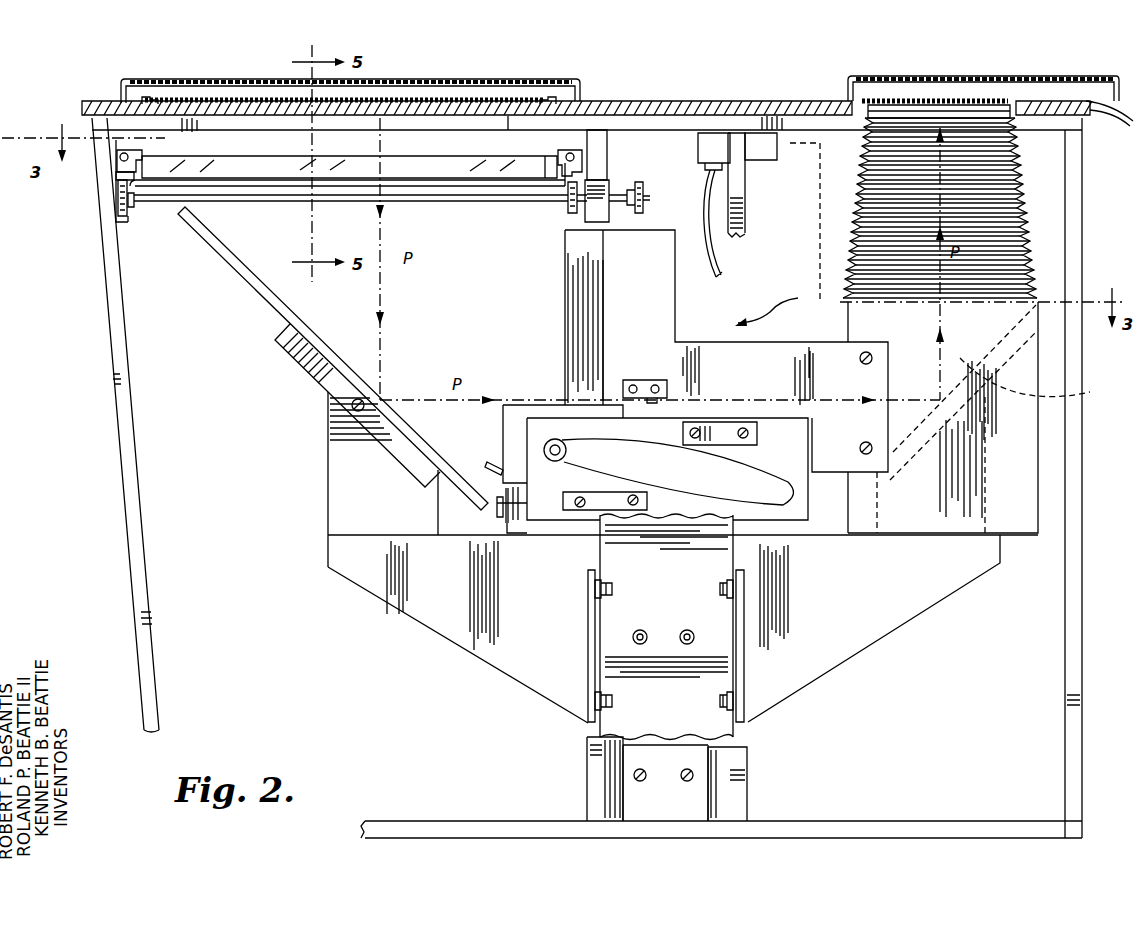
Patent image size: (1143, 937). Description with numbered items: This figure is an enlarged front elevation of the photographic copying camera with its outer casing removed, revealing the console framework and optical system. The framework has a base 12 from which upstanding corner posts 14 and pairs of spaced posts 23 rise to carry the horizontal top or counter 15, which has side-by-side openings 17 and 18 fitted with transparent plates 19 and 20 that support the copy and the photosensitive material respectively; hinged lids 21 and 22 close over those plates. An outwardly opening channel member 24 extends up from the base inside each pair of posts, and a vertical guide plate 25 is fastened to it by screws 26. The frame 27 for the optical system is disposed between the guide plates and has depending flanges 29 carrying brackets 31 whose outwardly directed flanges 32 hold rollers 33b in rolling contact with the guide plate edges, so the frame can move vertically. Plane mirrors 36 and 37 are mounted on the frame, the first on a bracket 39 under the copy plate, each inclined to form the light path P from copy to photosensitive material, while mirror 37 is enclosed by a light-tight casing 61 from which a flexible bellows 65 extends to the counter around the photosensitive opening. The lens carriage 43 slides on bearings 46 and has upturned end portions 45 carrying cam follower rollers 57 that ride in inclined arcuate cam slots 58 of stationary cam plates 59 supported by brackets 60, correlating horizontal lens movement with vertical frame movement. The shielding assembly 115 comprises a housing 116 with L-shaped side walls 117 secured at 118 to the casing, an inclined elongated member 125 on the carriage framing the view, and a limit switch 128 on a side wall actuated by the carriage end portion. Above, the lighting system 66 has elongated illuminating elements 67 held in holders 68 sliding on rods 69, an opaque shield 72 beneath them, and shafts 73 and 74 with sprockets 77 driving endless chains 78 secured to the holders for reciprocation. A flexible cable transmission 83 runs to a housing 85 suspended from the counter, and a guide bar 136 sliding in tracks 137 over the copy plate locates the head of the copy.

The base 12 is at (853, 832).
The corner posts 14 is at (128, 434).
The top or counter 15 is at (662, 101).
The opening 17 is at (528, 118).
The opening 18 is at (1000, 108).
The transparent plate 19 is at (490, 84).
The transparent plate 20 is at (985, 100).
The lid 21 is at (242, 80).
The lid 22 is at (928, 78).
The posts 23 is at (610, 176).
The channel member 24 is at (700, 815).
The guide plate 25 is at (718, 735).
The screws 26 is at (686, 781).
The frame 27 is at (898, 628).
The flanges 29 is at (548, 694).
The brackets 31 is at (746, 630).
The flanges 32 is at (590, 663).
The rollers 33b is at (600, 588).
The mirror 36 is at (265, 296).
The mirror 37 is at (1003, 392).
The bracket 39 is at (330, 481).
The carriage 43 is at (502, 427).
The upturned end portions 45 is at (520, 414).
The bearings 46 is at (510, 525).
The cam follower rollers 57 is at (566, 450).
The cam slots 58 is at (717, 466).
The cam plates 59 is at (806, 510).
The brackets 60 is at (683, 434).
The light-tight casing 61 is at (1015, 535).
The flexible bellows 65 is at (1024, 200).
The lighting system 66 is at (290, 205).
The illuminating elements 67 is at (405, 165).
The holders 68 is at (125, 173).
The rods 69 is at (118, 158).
The opaque shield 72 is at (455, 201).
The shaft 73 is at (616, 205).
The shaft 74 is at (167, 208).
The sprockets 77 is at (128, 212).
The endless chains 78 is at (126, 200).
The flexible cable transmission 83 is at (720, 275).
The housing 85 is at (763, 155).
The shielding assembly 115 is at (778, 303).
The housing 116 is at (677, 321).
The L-shaped side walls 117 is at (778, 345).
The securing points 118 is at (873, 356).
The inclined elongated member 125 is at (490, 462).
The limit switch 128 is at (650, 380).
The guide bar 136 is at (418, 100).
The tracks 137 is at (147, 97).